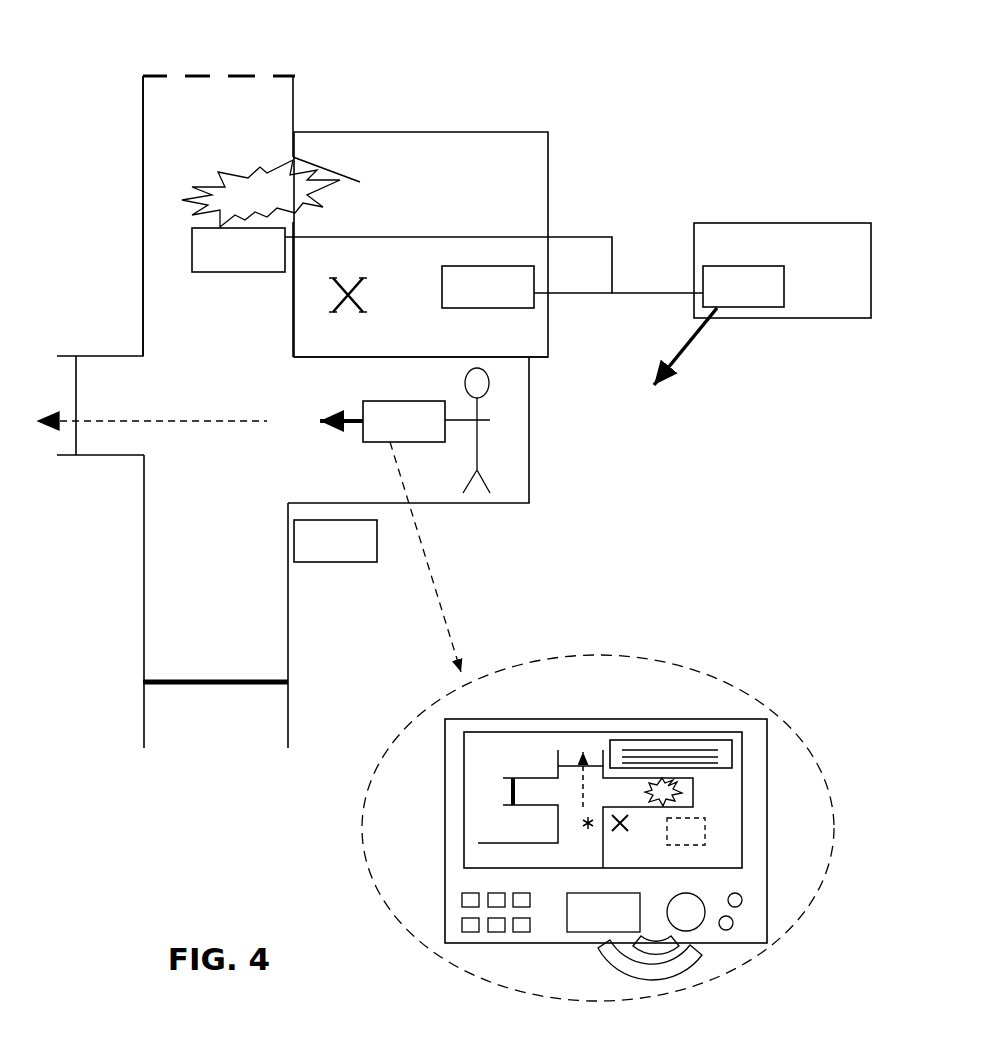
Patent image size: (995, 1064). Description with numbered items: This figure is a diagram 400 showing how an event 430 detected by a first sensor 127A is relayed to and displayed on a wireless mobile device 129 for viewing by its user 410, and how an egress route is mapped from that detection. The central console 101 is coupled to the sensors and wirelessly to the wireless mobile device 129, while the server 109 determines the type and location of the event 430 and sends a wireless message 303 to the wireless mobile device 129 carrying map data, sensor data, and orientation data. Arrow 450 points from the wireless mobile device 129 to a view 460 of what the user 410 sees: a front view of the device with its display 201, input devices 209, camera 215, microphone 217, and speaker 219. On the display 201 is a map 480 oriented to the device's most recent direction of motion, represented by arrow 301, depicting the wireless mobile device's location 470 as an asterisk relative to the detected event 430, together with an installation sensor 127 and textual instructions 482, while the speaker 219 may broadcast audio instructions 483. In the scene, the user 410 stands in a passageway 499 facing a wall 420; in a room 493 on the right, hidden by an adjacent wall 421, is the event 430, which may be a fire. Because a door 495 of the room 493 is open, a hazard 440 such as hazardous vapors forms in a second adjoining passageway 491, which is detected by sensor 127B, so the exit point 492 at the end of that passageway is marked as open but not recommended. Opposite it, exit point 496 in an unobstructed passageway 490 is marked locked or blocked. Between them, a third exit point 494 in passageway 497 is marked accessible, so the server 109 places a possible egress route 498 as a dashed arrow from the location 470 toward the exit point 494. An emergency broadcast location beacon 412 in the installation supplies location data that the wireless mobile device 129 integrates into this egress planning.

The diagram 400 is at (370, 92).
The exit point 492 is at (210, 73).
The second adjoining passageway 491 is at (162, 168).
The hazard 440 is at (268, 159).
The door 495 is at (340, 180).
The room 493 is at (472, 193).
The sensor 127B is at (265, 261).
The event 430 is at (363, 293).
The first sensor 127A is at (515, 298).
The adjacent wall 421 is at (435, 355).
The central console 101 is at (802, 258).
The server 109 is at (723, 301).
The wireless message 303 is at (705, 330).
The wall 420 is at (143, 312).
The third exit point 494 is at (71, 396).
The passageway 497 is at (100, 401).
The possible egress route 498 is at (155, 418).
The passageway 499 is at (343, 393).
The wireless mobile device 129 is at (382, 432).
The arrow 301 is at (355, 422).
The user 410 is at (492, 438).
The unobstructed passageway 490 is at (172, 554).
The emergency broadcast location beacon 412 is at (315, 552).
The exit point 496 is at (222, 664).
The arrow 450 is at (416, 545).
The view 460 is at (640, 657).
The map 480 is at (473, 758).
The display 201 is at (645, 732).
The instructions 482 is at (693, 740).
The wireless mobile device's location 470 is at (578, 822).
The installation sensor 127 is at (706, 844).
The input devices 209 is at (563, 905).
The audio instructions 483 is at (612, 958).
The speaker 219 is at (695, 930).
The microphone 217 is at (730, 930).
The camera 215 is at (740, 905).